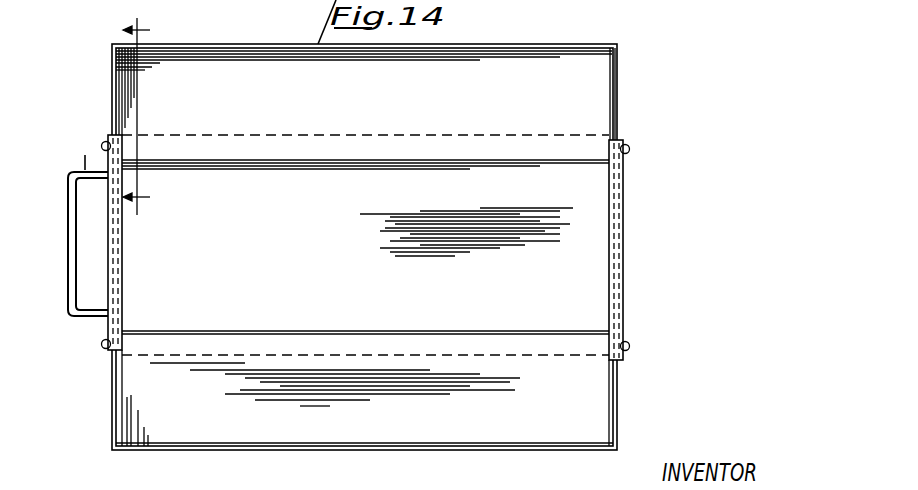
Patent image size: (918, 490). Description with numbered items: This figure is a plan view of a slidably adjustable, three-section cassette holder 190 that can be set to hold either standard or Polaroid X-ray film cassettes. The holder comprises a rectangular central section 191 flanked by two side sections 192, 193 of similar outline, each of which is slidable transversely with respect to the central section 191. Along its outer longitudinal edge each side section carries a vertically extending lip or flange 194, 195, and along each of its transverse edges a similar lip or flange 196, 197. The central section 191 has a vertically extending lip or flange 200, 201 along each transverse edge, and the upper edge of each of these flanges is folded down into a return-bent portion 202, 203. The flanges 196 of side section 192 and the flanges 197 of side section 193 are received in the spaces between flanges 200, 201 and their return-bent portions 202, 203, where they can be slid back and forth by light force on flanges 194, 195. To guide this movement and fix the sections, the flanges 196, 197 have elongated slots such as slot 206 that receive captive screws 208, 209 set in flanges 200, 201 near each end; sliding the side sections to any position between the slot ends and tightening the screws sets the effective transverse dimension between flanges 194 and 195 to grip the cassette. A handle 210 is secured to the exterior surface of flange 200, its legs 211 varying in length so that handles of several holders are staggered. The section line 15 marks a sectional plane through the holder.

The section line 15- 15 is at (139, 113).
The cassette holder 190 is at (623, 112).
The central section 191 is at (372, 243).
The side section 192 is at (439, 426).
The side section 193 is at (406, 109).
The lip or flange 194 is at (489, 448).
The lip or flange 195 is at (545, 46).
The lip or flange 196 is at (95, 401).
The lip or flange 197 is at (620, 78).
The lip or flange 200 is at (113, 268).
The lip or flange 201 is at (626, 237).
The return-bent portion 202 is at (122, 273).
The return-bent portion 203 is at (608, 257).
The elongated slot 206 is at (622, 364).
The captive screw 208 is at (632, 346).
The captive screw 209 is at (628, 150).
The handle 210 is at (74, 226).
The legs 211 is at (40, 341).